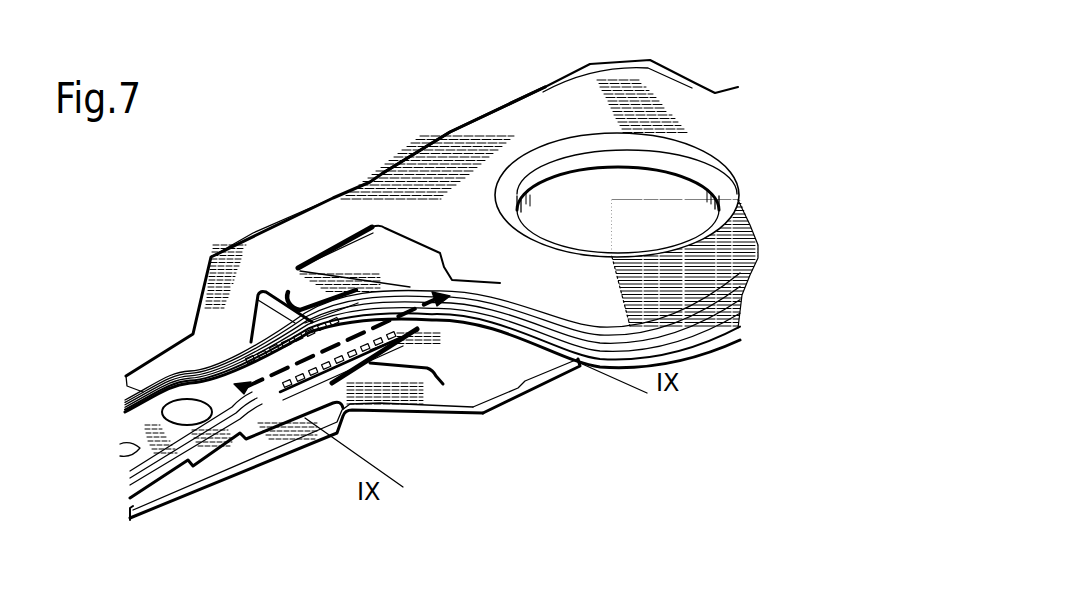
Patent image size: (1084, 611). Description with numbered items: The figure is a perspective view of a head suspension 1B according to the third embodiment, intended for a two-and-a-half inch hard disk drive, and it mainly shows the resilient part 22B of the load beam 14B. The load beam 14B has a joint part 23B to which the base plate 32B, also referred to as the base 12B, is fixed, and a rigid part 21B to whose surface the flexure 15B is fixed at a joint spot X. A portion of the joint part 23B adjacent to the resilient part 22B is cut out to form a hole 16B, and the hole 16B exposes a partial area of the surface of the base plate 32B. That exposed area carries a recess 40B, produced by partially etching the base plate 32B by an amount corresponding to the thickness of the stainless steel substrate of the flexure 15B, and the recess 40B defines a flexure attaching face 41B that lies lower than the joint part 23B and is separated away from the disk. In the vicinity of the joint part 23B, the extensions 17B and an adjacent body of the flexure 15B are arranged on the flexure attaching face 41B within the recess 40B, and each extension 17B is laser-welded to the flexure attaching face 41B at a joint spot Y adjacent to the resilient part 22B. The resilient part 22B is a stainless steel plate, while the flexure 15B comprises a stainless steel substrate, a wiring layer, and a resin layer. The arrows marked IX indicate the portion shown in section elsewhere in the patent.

The head suspension 1B is at (314, 165).
The base 12B is at (395, 159).
The load beam 14B is at (302, 450).
The flexure 15B is at (205, 443).
The hole 16B is at (412, 243).
The extension 17B is at (427, 350).
The rigid part 21B is at (260, 440).
The resilient part 22B is at (200, 294).
The joint part 23B is at (258, 252).
The base plate 32B is at (560, 378).
The recess 40B is at (343, 263).
The flexure attaching face 41B is at (330, 243).